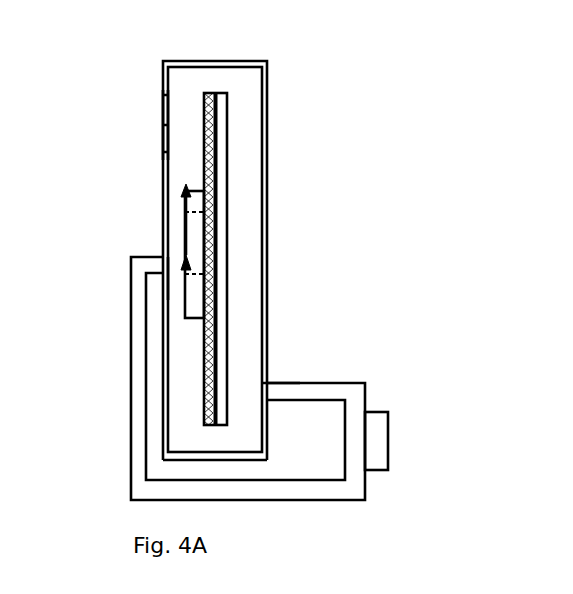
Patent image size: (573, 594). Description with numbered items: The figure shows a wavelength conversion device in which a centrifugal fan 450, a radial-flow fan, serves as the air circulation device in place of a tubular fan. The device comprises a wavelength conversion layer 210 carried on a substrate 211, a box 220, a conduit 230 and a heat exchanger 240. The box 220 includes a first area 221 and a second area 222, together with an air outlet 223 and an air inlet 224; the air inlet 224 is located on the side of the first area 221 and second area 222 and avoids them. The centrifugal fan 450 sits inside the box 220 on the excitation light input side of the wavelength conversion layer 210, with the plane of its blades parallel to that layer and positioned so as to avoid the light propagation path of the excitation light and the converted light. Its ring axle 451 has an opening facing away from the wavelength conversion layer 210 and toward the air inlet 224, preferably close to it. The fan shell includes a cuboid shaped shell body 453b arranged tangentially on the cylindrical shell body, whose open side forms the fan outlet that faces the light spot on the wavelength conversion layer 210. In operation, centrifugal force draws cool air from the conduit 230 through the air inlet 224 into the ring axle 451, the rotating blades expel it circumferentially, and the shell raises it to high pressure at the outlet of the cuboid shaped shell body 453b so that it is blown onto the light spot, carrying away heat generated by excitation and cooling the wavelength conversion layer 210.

The wavelength conversion layer 210 is at (207, 93).
The substrate 211 is at (222, 93).
The box 220 is at (264, 152).
The first area 221 is at (164, 122).
The second area 222 is at (164, 122).
The air outlet 223 is at (263, 390).
The air inlet 224 is at (168, 268).
The conduit 230 is at (142, 432).
The heat exchanger 240 is at (380, 440).
The centrifugal fan 450 is at (188, 228).
The ring axle 451 is at (186, 262).
The cuboid shaped shell body 453b is at (184, 192).